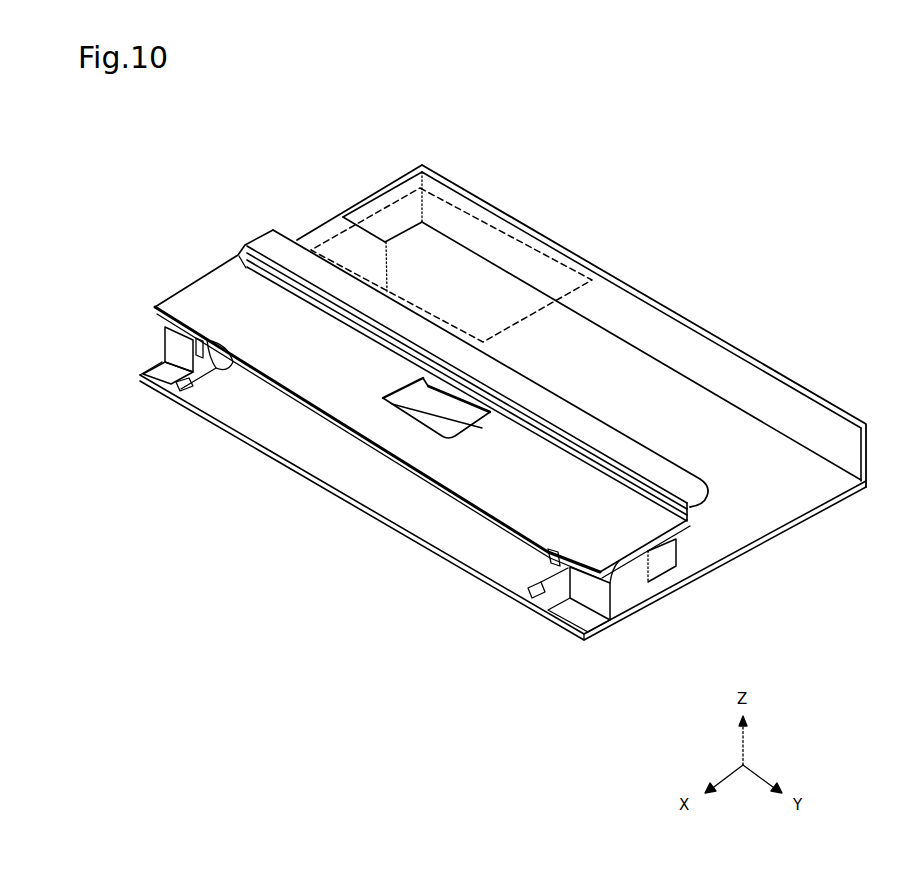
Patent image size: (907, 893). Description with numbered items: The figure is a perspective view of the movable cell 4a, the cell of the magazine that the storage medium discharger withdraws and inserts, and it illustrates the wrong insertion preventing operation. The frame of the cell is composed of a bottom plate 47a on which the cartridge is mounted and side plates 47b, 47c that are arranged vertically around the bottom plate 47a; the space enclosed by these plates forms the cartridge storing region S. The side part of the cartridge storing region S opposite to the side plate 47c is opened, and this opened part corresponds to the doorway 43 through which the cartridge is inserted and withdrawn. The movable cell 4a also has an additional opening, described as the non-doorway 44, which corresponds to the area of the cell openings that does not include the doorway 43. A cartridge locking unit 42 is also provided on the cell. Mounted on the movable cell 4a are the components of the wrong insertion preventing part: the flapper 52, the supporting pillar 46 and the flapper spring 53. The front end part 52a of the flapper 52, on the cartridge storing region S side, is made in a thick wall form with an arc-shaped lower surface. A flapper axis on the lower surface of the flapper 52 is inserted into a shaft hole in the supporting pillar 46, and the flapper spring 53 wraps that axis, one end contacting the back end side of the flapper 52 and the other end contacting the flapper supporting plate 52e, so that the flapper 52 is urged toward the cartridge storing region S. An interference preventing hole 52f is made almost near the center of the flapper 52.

The movable cell 4a is at (545, 147).
The doorway 43 is at (766, 515).
The non-doorway 44 is at (528, 240).
The bottom plate 47a is at (645, 378).
The side plate 47b is at (748, 351).
The side plate 47c is at (387, 187).
The flapper 52 is at (208, 303).
The front end part 52a is at (268, 242).
The flapper supporting plate 52e is at (418, 538).
The interference preventing hole 52f is at (417, 415).
The supporting pillar 46 is at (178, 350).
The flapper spring 53 is at (210, 360).
The cartridge locking unit 42 is at (663, 560).
The cartridge storing region S is at (583, 346).